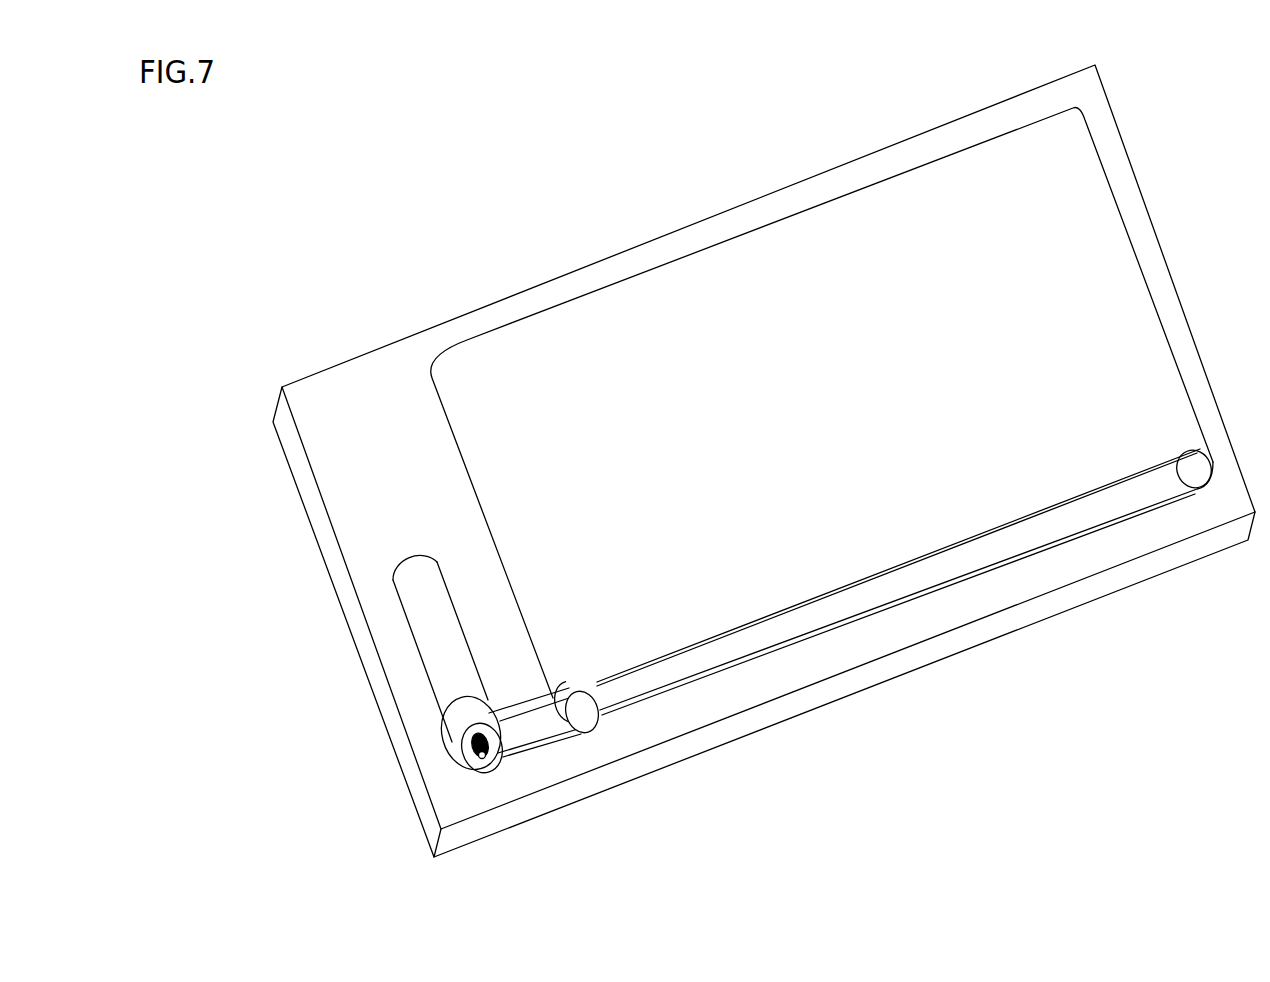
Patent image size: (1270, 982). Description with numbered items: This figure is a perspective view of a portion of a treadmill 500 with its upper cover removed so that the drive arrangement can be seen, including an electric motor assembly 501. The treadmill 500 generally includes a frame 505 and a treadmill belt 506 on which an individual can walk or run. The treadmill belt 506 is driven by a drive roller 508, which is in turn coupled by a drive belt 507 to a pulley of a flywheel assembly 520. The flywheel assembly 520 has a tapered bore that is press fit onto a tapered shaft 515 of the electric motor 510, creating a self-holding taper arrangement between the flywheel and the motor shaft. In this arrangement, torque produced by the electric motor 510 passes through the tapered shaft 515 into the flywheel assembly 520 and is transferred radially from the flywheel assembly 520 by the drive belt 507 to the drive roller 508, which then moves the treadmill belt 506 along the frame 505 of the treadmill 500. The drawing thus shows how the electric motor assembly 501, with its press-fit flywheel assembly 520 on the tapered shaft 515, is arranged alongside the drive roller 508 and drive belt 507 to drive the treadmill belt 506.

The treadmill 500 is at (608, 198).
The electric motor assembly 501 is at (342, 671).
The frame 505 is at (783, 189).
The treadmill belt 506 is at (1122, 268).
The drive belt 507 is at (528, 740).
The drive roller 508 is at (589, 718).
The electric motor 510 is at (405, 583).
The tapered shaft 515 is at (453, 725).
The flywheel assembly 520 is at (455, 762).